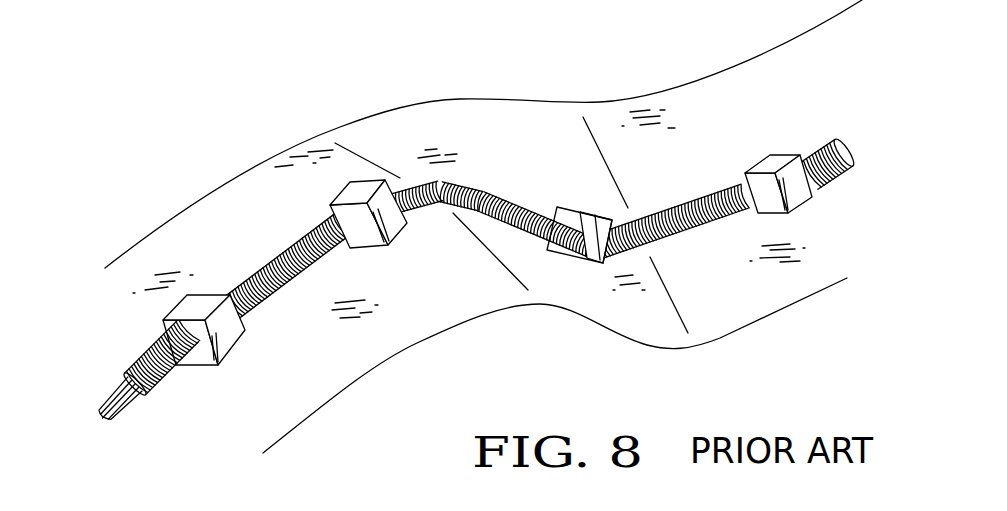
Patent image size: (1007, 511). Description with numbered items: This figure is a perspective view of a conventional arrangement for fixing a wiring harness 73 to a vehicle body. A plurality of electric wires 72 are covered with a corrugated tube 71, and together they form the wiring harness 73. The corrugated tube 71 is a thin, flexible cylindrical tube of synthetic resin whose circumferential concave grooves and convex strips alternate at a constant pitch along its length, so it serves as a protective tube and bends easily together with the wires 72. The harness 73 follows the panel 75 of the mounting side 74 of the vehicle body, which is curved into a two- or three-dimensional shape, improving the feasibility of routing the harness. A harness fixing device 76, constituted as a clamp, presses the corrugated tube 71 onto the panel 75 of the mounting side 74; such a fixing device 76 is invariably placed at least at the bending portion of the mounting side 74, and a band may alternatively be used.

The corrugated tube 71 is at (500, 190).
The electric wires 72 is at (107, 395).
The wiring harness 73 is at (245, 273).
The mounting side 74 is at (437, 93).
The panel 75 is at (470, 137).
The harness fixing device 76 is at (372, 178).